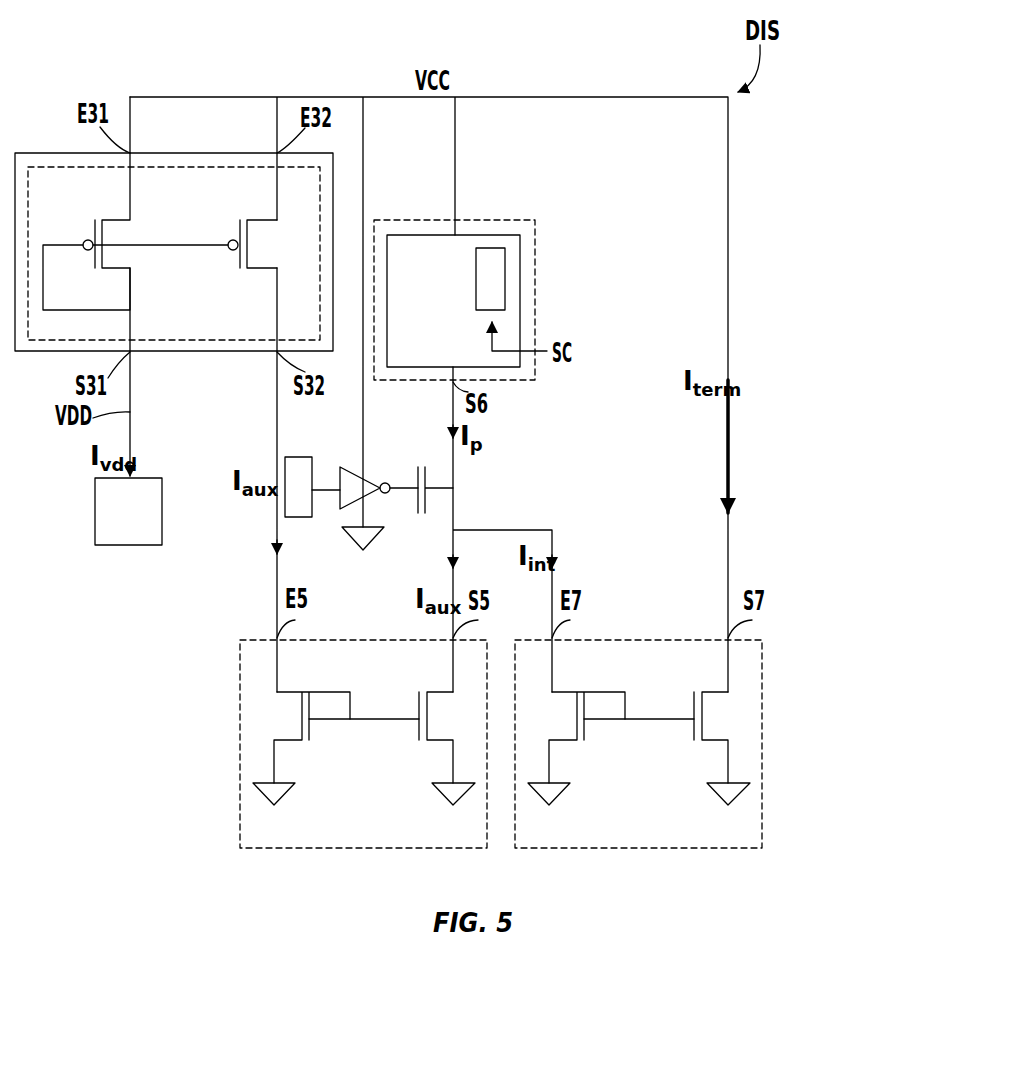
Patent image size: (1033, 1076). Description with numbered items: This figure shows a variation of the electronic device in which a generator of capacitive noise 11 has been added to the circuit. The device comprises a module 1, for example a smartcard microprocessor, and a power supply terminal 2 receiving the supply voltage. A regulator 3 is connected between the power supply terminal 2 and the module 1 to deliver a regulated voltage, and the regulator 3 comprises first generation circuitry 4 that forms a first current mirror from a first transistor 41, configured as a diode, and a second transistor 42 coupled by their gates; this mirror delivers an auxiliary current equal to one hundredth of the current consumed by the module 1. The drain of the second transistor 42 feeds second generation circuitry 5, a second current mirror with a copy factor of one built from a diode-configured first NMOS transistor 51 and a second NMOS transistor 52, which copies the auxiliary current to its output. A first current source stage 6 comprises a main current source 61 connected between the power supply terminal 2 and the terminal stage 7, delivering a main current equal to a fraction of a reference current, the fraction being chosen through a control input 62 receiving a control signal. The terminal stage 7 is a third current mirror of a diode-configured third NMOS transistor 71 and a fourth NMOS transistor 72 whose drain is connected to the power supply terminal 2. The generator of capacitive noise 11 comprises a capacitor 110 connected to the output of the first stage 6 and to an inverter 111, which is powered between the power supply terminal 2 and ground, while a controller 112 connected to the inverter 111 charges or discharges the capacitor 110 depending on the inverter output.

The module 1 is at (95, 512).
The power supply terminal 2 is at (130, 97).
The regulator 3 is at (40, 153).
The first generation circuitry 4 is at (192, 167).
The first transistor 41 is at (138, 253).
The second transistor 42 is at (281, 253).
The second generation circuitry 5 is at (365, 638).
The first NMOS transistor 51 is at (270, 717).
The second NMOS transistor 52 is at (459, 717).
The first current source stage 6 is at (535, 250).
The main current source 61 is at (520, 298).
The control input 62 is at (476, 275).
The terminal stage 7 is at (640, 638).
The third NMOS transistor 71 is at (545, 717).
The fourth NMOS transistor 72 is at (734, 717).
The generator of capacitive noise 11 is at (401, 461).
The capacitor 110 is at (413, 506).
The inverter 111 is at (340, 502).
The controller 112 is at (305, 457).